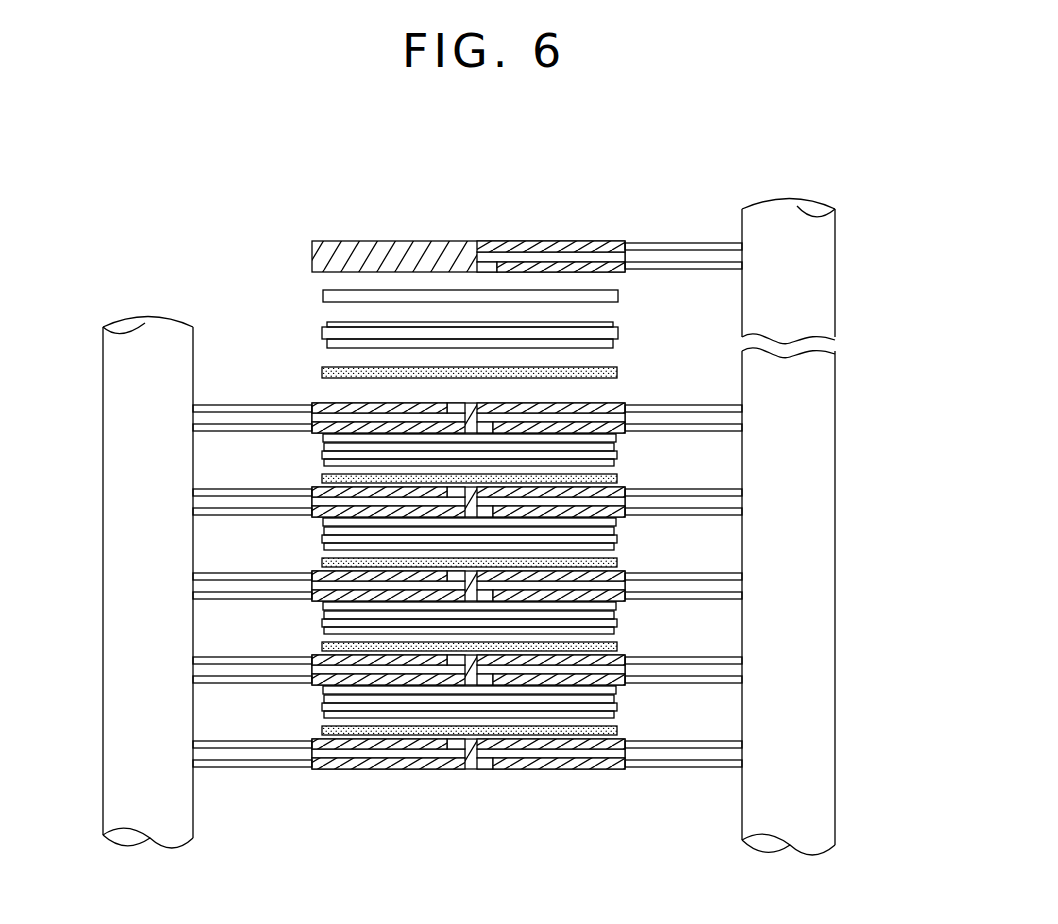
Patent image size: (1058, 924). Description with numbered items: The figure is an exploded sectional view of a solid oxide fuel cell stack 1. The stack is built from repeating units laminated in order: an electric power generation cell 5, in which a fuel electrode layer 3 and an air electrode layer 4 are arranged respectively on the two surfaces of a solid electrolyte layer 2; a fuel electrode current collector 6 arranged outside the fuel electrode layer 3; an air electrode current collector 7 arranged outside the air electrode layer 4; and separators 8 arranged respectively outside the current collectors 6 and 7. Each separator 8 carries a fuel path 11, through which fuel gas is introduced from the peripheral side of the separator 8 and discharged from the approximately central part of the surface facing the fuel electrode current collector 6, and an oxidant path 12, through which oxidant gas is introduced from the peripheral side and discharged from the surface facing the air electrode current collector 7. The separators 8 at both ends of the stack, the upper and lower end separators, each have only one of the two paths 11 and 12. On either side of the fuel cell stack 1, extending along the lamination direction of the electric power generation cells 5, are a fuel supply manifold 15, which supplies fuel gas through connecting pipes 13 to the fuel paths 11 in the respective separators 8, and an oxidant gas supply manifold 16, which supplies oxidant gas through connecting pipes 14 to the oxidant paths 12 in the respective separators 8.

The fuel cell stack 1 is at (636, 214).
The solid electrolyte layer 2 is at (321, 333).
The fuel electrode layer 3 is at (437, 523).
The air electrode layer 4 is at (325, 324).
The electric power generation cell 5 is at (456, 479).
The fuel electrode current collector 6 is at (618, 372).
The air electrode current collector 7 is at (619, 296).
The separator 8 is at (316, 247).
The fuel path 11 is at (400, 415).
The oxidant path 12 is at (550, 262).
The connecting pipe 13 is at (236, 433).
The connecting pipe 14 is at (708, 243).
The fuel supply manifold 15 is at (105, 757).
The oxidant gas supply manifold 16 is at (836, 432).